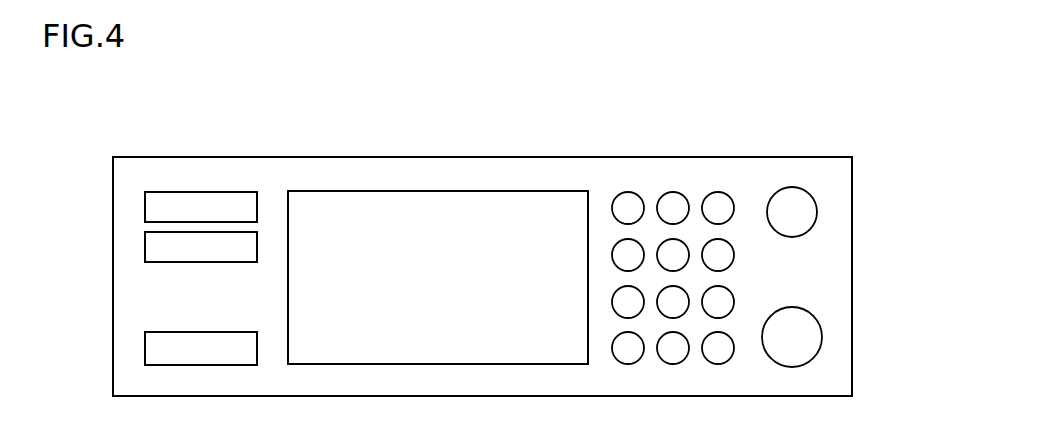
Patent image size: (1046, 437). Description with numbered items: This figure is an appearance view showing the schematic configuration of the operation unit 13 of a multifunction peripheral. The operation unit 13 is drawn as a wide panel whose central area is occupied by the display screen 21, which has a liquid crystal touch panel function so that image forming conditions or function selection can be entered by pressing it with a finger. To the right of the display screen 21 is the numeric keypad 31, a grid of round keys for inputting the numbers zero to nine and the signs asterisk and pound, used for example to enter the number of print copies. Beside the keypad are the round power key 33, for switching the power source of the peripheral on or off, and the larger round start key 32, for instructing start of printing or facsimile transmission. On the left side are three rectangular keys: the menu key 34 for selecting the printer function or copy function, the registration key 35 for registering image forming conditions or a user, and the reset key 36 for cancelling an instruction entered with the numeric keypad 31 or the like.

The operation unit 13 is at (800, 157).
The display screen 21 is at (545, 191).
The numeric keypad 31 is at (682, 177).
The start key 32 is at (822, 337).
The power key 33 is at (817, 212).
The menu key 34 is at (145, 209).
The registration key 35 is at (145, 252).
The reset key 36 is at (145, 352).